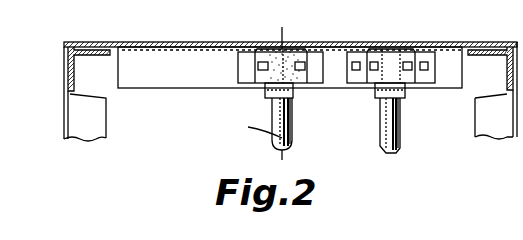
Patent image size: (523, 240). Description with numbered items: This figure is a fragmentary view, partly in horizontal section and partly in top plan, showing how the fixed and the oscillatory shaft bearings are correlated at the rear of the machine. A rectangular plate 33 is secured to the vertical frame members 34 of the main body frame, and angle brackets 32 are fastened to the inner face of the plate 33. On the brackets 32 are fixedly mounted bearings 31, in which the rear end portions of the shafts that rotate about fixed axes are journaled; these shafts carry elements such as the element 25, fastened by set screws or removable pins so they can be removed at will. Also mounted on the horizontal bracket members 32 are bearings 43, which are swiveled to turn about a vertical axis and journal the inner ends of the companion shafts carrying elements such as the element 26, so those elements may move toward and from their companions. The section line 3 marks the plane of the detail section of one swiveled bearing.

The rectangular plate 33 is at (188, 41).
The vertical frame members 34 is at (72, 70).
The angle brackets 32 is at (448, 78).
The bearings 31 is at (392, 62).
The bearings 43 is at (275, 65).
The element 26 is at (293, 126).
The element 25 is at (388, 132).
The section line 3- 3 is at (245, 27).